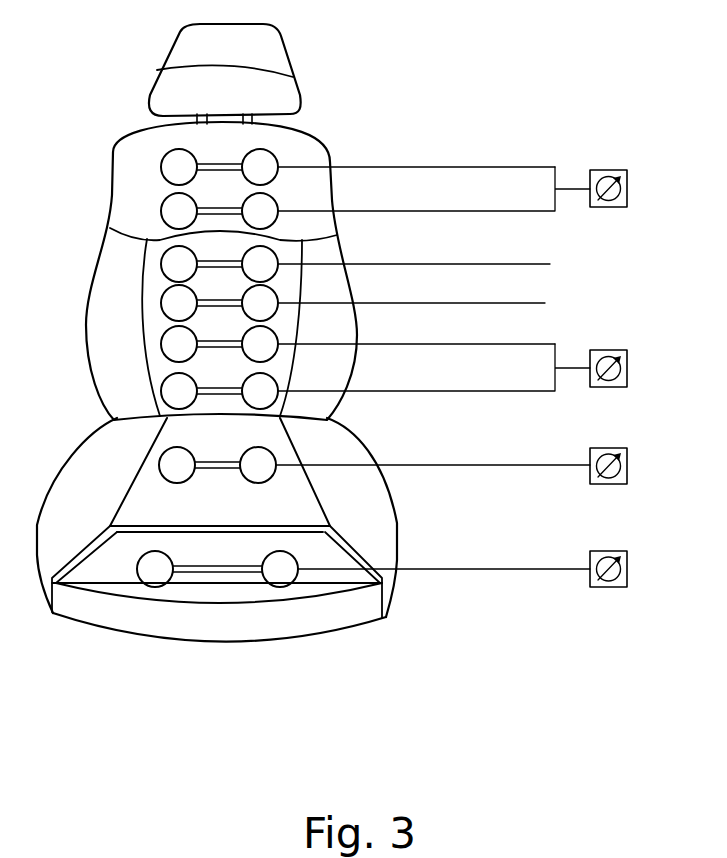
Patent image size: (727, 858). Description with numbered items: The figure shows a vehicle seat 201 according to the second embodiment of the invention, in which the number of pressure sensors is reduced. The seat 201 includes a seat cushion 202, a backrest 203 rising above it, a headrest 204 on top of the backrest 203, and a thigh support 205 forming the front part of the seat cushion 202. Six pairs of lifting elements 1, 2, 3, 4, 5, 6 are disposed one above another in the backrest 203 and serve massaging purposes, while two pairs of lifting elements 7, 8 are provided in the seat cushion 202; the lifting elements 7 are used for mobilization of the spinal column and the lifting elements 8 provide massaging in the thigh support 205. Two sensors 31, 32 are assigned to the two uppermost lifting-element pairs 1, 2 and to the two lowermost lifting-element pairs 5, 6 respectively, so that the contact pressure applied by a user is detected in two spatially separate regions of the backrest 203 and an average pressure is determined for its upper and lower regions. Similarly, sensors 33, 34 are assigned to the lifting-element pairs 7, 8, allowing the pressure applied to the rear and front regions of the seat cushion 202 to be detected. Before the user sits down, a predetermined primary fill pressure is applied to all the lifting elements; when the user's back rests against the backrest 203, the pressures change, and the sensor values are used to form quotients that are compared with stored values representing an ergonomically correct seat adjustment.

The seat 201 is at (297, 351).
The seat cushion 202 is at (143, 488).
The backrest 203 is at (113, 263).
The headrest 204 is at (292, 92).
The thigh support 205 is at (152, 618).
The sensor 31 is at (627, 185).
The sensor 32 is at (627, 366).
The sensor 33 is at (627, 464).
The sensor 34 is at (627, 567).
The lifting element 1 is at (358, 167).
The lifting element 2 is at (375, 198).
The lifting element 3 is at (355, 264).
The lifting element 4 is at (353, 303).
The lifting element 5 is at (358, 344).
The lifting element 6 is at (375, 376).
The lifting element 7 is at (374, 465).
The lifting element 8 is at (363, 569).